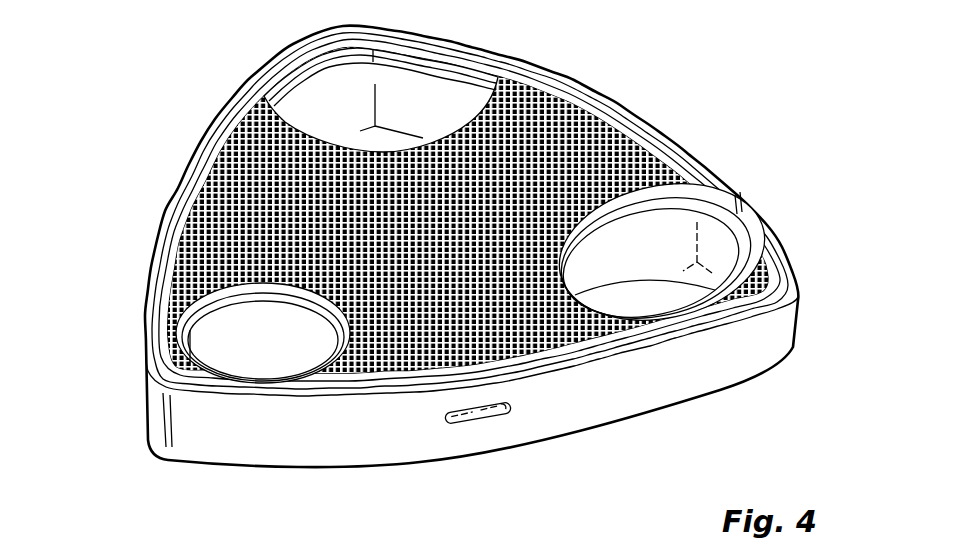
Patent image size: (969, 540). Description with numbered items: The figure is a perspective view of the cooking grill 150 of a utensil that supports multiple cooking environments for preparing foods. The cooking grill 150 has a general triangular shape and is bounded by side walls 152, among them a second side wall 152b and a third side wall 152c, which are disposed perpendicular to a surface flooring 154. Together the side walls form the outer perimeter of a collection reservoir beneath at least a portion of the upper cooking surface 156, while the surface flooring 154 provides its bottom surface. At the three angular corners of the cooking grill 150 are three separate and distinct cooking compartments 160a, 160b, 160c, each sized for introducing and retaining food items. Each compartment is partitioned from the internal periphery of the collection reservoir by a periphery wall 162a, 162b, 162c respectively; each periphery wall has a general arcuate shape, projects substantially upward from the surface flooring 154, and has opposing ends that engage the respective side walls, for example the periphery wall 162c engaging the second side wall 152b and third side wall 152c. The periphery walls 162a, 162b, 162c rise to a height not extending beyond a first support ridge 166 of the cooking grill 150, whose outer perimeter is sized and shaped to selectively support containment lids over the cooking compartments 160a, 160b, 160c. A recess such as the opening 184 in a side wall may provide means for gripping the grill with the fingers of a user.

The cooking grill 150 is at (708, 118).
The side wall 152 is at (157, 392).
The second side wall 152b is at (597, 90).
The third side wall 152c is at (374, 446).
The surface flooring 154 is at (479, 320).
The upper cooking surface 156 is at (535, 372).
The first cooking compartment 160a is at (336, 372).
The second cooking compartment 160b is at (346, 103).
The third cooking compartment 160c is at (612, 322).
The periphery wall 162a is at (284, 358).
The periphery wall 162b is at (472, 117).
The periphery wall 162c is at (676, 266).
The first support ridge 166 is at (732, 240).
The slot 184 is at (480, 416).